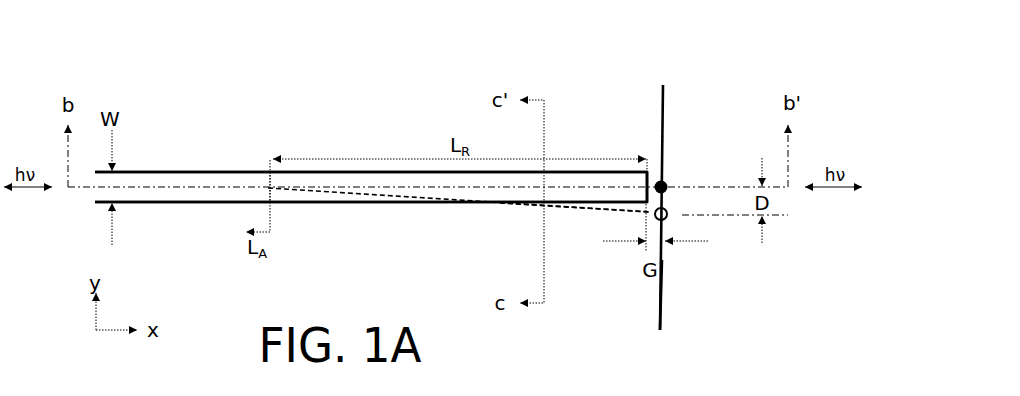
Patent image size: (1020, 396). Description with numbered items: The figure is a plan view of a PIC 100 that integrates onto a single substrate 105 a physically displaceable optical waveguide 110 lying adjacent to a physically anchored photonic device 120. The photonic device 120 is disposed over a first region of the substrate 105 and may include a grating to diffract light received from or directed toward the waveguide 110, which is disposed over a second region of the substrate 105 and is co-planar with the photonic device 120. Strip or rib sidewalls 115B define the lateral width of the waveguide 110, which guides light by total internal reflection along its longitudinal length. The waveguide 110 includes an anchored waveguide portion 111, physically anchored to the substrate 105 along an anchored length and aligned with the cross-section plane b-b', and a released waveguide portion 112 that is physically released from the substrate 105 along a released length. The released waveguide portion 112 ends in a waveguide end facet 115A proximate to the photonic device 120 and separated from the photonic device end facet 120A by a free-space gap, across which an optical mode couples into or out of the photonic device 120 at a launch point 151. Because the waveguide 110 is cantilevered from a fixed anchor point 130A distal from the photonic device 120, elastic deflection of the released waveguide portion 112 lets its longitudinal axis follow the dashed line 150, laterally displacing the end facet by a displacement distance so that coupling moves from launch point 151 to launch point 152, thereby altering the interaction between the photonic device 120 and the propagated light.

The PIC 100 is at (118, 74).
The substrate 105 is at (361, 272).
The optical waveguide 110 is at (561, 196).
The anchored waveguide portion 111 is at (184, 196).
The released waveguide portion 112 is at (504, 201).
The waveguide end facet 115A is at (650, 170).
The strip or rib sidewalls 115B is at (211, 169).
The photonic device 120 is at (684, 135).
The photonic device end facet 120A is at (657, 297).
The anchor point 130A is at (270, 157).
The dashed line 150 is at (601, 214).
The launch point 151 is at (669, 180).
The launch point 152 is at (673, 218).